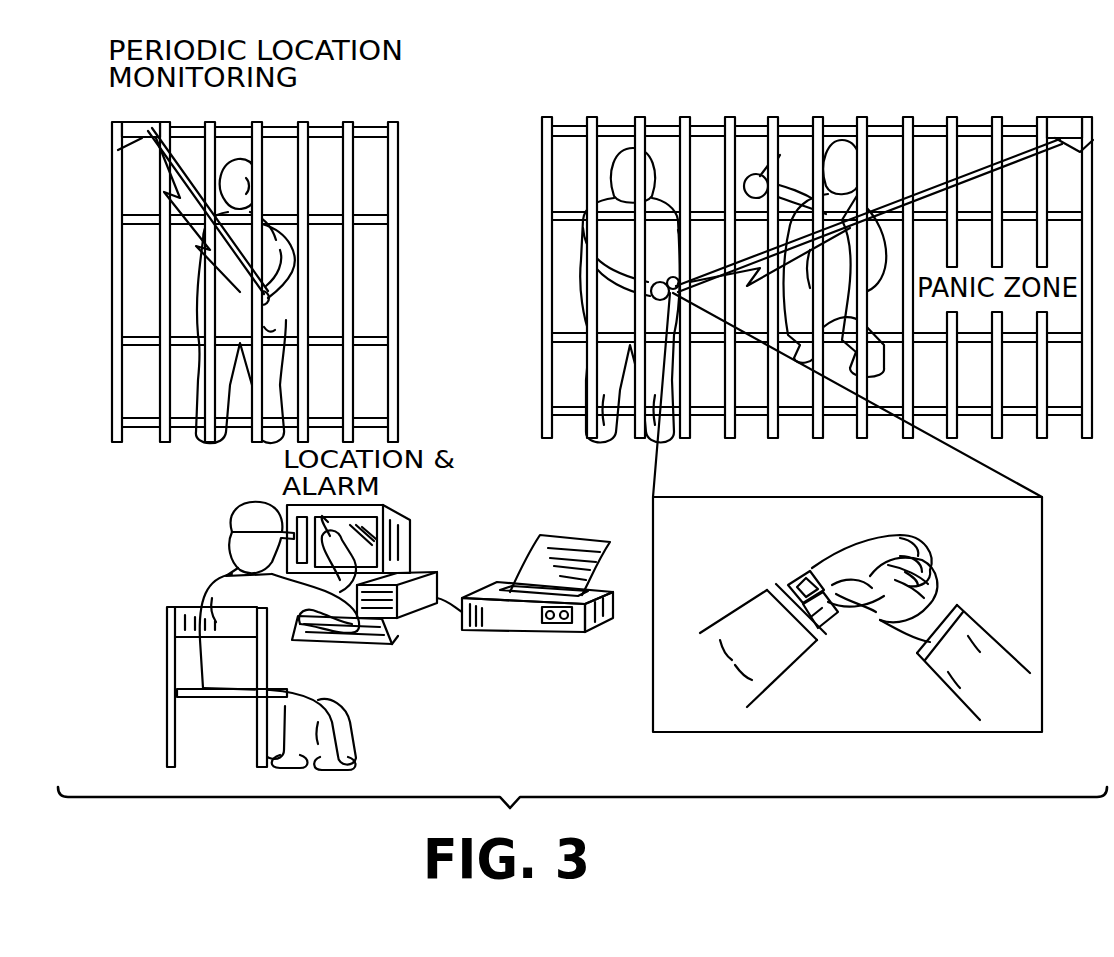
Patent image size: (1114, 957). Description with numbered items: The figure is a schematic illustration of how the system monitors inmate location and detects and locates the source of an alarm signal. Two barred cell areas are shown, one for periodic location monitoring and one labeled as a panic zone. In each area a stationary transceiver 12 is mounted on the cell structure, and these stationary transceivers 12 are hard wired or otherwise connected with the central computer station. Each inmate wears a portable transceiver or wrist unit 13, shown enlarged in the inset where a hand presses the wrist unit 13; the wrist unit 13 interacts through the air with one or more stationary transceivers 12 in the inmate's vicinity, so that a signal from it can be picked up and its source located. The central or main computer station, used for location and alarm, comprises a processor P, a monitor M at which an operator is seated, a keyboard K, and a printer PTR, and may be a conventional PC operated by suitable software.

The stationary transceiver 12 is at (132, 126).
The portable transceiver or wrist unit 13 is at (797, 578).
The monitor M is at (412, 532).
The processor P is at (423, 570).
The keyboard K is at (400, 640).
The printer PTR is at (603, 627).